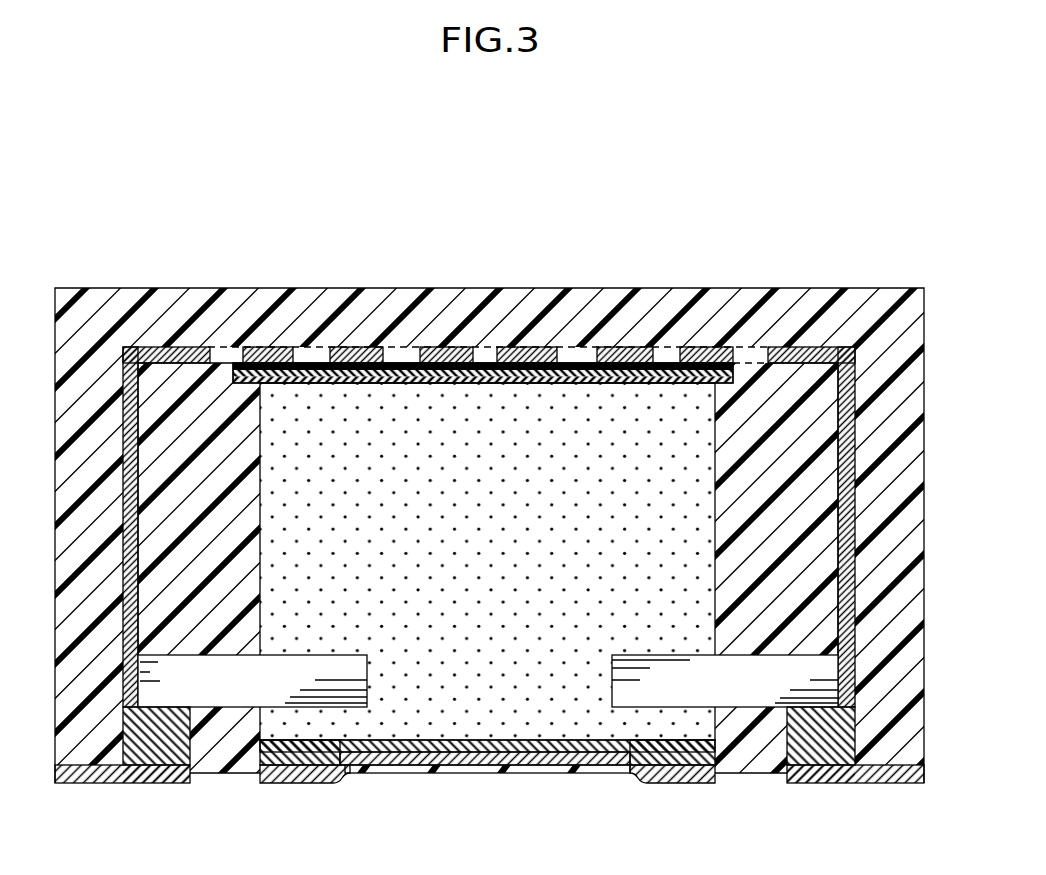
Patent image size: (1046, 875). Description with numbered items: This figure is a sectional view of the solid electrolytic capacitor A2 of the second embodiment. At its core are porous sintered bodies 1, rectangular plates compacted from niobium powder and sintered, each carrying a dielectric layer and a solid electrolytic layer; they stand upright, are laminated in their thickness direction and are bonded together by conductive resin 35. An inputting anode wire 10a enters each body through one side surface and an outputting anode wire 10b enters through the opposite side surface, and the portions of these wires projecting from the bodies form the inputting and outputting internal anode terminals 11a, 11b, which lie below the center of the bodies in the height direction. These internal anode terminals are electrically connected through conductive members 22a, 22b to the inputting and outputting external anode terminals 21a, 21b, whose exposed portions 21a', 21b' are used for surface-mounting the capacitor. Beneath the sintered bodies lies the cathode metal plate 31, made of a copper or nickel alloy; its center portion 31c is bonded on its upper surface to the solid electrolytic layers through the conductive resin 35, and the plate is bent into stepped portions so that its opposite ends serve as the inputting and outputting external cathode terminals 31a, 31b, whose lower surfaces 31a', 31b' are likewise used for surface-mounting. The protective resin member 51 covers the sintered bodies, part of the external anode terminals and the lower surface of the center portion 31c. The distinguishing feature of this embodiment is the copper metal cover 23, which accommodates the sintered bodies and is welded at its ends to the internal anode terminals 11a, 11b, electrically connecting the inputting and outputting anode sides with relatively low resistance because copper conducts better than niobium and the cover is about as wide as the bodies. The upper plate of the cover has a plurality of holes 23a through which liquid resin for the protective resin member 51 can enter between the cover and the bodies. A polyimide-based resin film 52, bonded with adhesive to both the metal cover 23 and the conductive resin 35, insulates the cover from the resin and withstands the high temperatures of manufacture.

The solid electrolytic capacitor A2 is at (913, 223).
The porous sintered body 1 is at (563, 725).
The inputting anode wire 10a is at (348, 662).
The outputting anode wire 10b is at (637, 662).
The inputting internal anode terminal 11a is at (222, 672).
The outputting internal anode terminal 11b is at (750, 673).
The inputting external anode terminal 21a is at (122, 809).
The exposed portion of inputting external anode terminal 21a' is at (159, 820).
The outputting external anode terminal 21b is at (863, 816).
The exposed portion of outputting external anode terminal 21b' is at (835, 809).
The conductive member 22a is at (180, 733).
The conductive member 22b is at (788, 752).
The metal cover 23 is at (450, 345).
The hole 23a is at (517, 346).
The cathode metal plate 31 is at (458, 757).
The inputting external cathode terminal 31a is at (687, 806).
The lower surface of inputting external cathode terminal 31a' is at (672, 804).
The outputting external cathode terminal 31b is at (305, 820).
The lower surface of outputting external cathode terminal 31b' is at (335, 796).
The center portion of cathode metal plate 31c is at (510, 755).
The conductive resin 35 is at (400, 362).
The protective resin member 51 is at (602, 318).
The resin film 52 is at (670, 345).